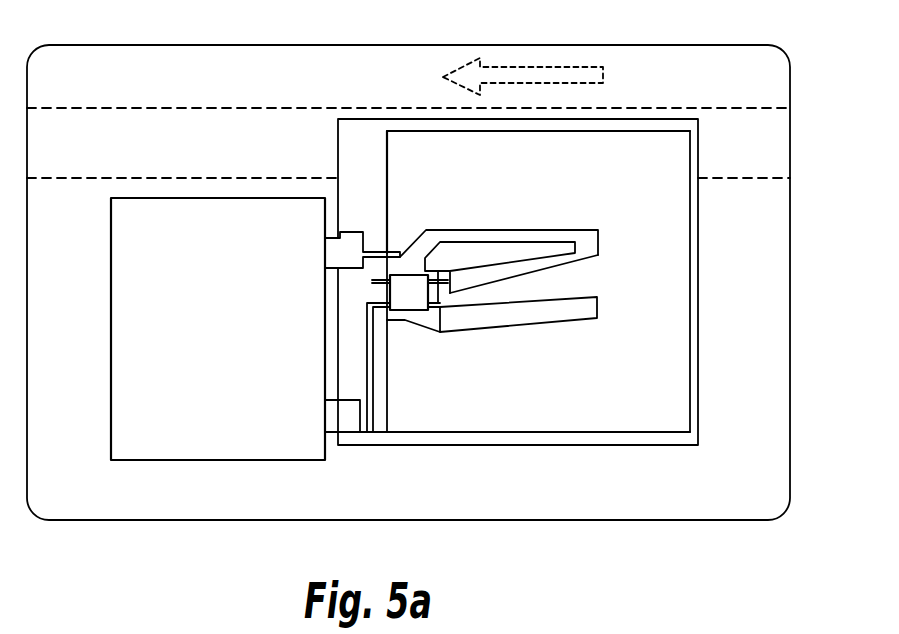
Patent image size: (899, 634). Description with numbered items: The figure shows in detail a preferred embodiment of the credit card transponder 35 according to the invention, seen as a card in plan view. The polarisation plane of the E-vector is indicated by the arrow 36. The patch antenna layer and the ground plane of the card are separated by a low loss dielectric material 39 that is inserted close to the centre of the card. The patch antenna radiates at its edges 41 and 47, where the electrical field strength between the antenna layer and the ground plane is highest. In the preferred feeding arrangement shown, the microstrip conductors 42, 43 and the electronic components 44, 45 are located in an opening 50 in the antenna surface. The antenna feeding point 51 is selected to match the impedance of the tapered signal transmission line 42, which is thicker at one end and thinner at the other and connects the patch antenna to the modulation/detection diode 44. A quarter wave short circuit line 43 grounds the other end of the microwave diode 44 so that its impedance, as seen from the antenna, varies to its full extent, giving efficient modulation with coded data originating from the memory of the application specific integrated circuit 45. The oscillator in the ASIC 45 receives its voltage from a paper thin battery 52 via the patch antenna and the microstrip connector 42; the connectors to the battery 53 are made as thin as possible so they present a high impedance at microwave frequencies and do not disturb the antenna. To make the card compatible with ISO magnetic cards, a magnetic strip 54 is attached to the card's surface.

The transponder 35 is at (712, 497).
The arrow 36 is at (588, 75).
The low loss dielectric material 39 is at (560, 438).
The edge 41 is at (385, 352).
The tapered signal transmission line 42 is at (693, 263).
The quarter wave short circuit line 43 is at (600, 249).
The modulation/detection diode 44 is at (437, 303).
The application specific integrated circuit 45 is at (412, 310).
The edge 47 is at (680, 340).
The opening 50 is at (477, 318).
The antenna feeding point 51 is at (605, 285).
The paper thin battery 52 is at (218, 442).
The connectors to the battery 53 is at (372, 256).
The magnetic strip 54 is at (752, 152).